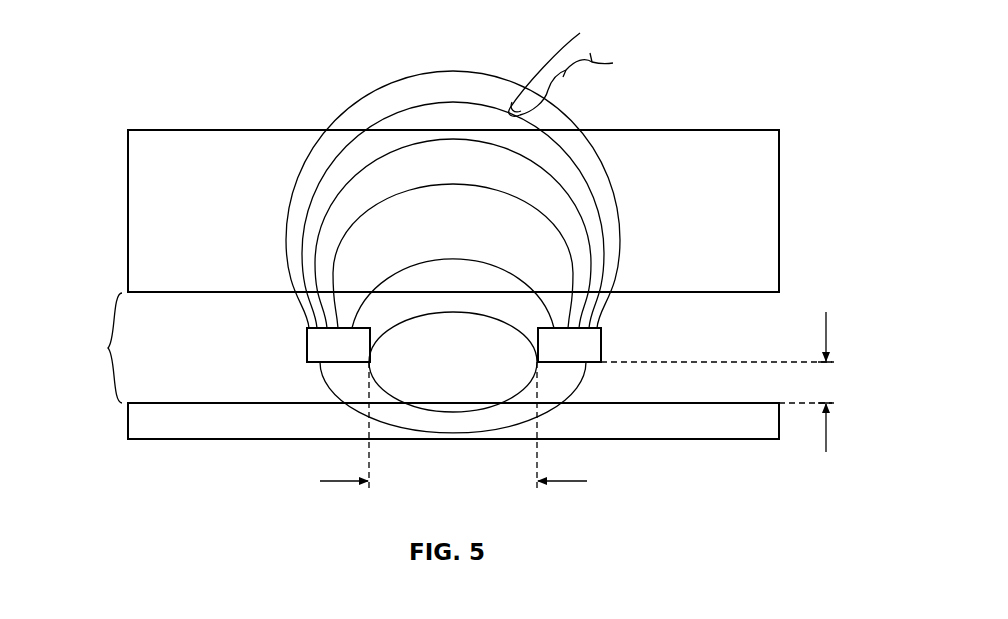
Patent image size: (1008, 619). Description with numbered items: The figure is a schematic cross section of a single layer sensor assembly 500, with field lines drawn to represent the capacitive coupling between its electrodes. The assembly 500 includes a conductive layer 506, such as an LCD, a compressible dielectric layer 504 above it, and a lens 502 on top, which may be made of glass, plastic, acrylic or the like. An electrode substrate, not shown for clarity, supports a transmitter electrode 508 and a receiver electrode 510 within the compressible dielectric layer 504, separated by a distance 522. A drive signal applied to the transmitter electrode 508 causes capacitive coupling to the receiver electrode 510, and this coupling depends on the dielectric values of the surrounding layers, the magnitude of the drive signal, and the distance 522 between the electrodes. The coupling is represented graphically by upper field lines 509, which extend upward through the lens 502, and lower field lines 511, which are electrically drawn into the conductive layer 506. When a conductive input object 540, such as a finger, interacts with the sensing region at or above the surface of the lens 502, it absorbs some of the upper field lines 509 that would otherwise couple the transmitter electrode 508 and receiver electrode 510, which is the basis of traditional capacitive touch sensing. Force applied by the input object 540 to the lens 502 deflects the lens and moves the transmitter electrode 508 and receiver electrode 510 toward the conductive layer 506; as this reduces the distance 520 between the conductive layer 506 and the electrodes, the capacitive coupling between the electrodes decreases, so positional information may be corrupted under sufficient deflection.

The single layer sensor assembly 500 is at (131, 38).
The lens 502 is at (196, 129).
The compressible dielectric layer 504 is at (96, 348).
The conductive layer 506 is at (128, 420).
The transmitter electrode 508 is at (307, 345).
The upper field lines 509 is at (612, 202).
The receiver electrode 510 is at (601, 346).
The lower field lines 511 is at (350, 408).
The distance between the conductive layer and the electrodes 520 is at (826, 340).
The distance between the electrodes 522 is at (565, 481).
The conductive input object 540 is at (600, 65).